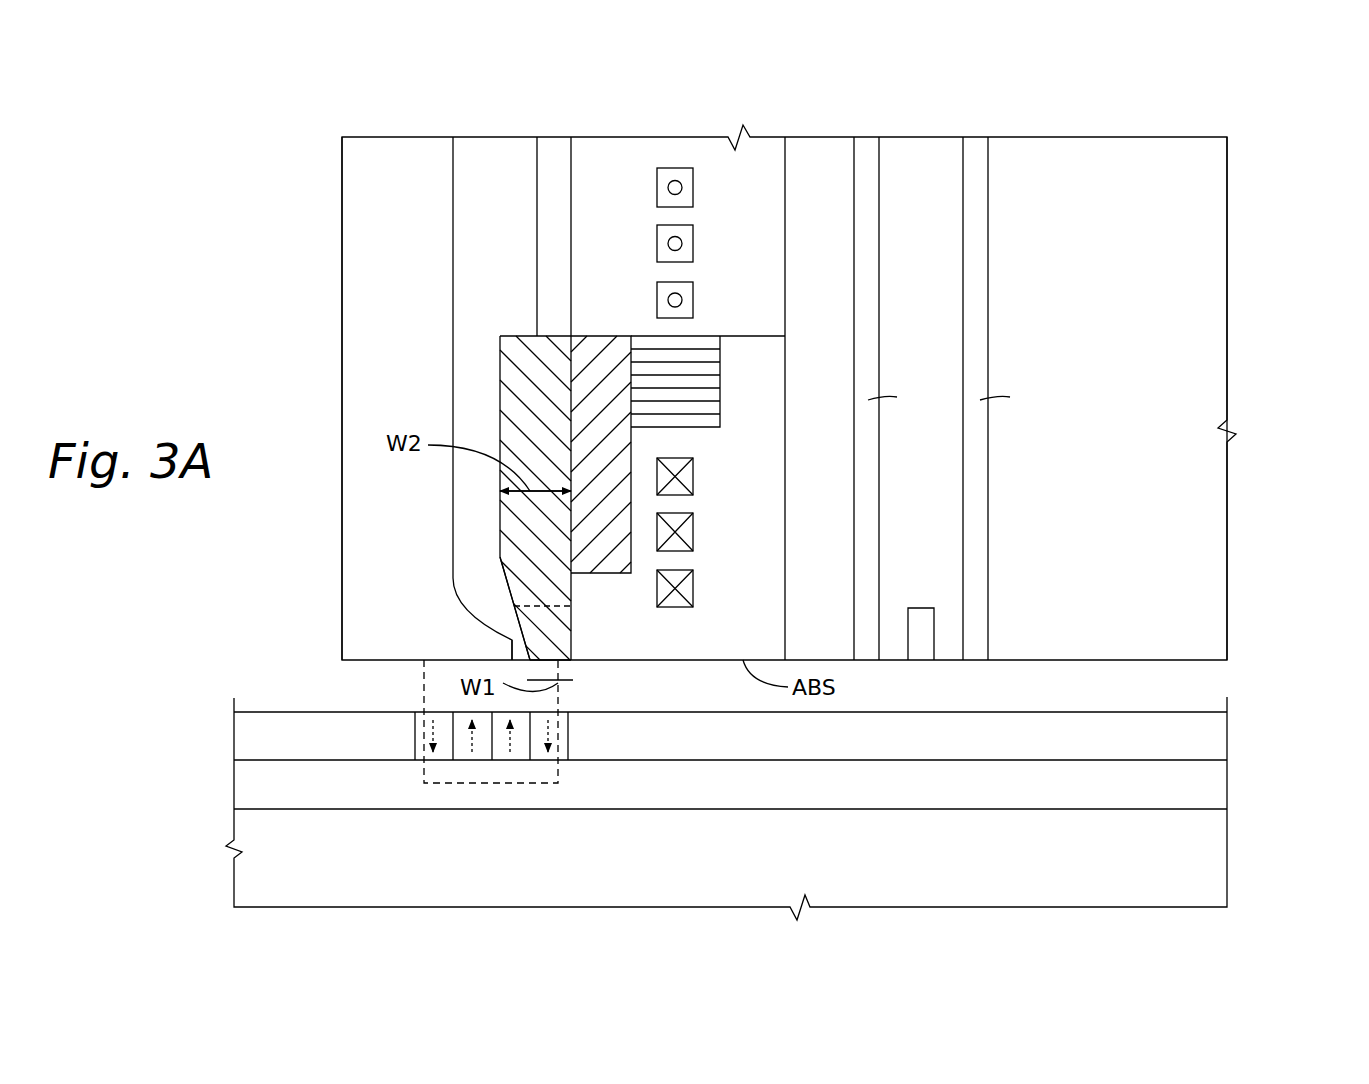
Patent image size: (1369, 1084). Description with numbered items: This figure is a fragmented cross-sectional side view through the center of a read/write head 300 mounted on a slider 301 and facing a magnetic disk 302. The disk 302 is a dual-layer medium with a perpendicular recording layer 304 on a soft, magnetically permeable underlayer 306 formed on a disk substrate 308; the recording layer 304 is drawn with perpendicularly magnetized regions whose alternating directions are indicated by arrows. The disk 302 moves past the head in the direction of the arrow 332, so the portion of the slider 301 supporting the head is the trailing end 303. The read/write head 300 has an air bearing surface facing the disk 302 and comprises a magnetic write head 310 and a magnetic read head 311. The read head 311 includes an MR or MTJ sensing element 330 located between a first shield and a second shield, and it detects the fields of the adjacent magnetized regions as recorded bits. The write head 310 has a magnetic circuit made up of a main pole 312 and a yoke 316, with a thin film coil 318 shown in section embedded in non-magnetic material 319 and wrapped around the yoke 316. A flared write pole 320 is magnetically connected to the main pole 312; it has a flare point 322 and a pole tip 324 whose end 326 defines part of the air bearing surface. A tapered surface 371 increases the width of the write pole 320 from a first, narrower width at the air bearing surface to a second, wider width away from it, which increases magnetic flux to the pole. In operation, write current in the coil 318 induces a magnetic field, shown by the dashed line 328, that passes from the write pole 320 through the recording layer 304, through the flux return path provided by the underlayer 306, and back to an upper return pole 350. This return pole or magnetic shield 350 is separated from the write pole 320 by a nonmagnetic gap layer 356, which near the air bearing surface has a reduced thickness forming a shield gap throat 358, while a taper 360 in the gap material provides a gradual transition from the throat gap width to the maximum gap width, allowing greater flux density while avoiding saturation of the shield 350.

The read/write head 300 is at (187, 128).
The slider 301 is at (1215, 248).
The magnetic disk 302 is at (1256, 838).
The trailing end 303 is at (303, 366).
The recording layer 304 is at (1215, 740).
The magnetically permeable underlayer 306 is at (1215, 789).
The disk substrate 308 is at (1215, 878).
The magnetic write head 310 is at (797, 118).
The magnetic read head 311 is at (998, 118).
The main pole 312 is at (592, 345).
The yoke 316 is at (707, 333).
The thin film coil 318 is at (705, 157).
The non-magnetic material 319 is at (627, 227).
The write pole 320 is at (515, 347).
The flare point 322 is at (545, 602).
The pole tip 324 is at (567, 623).
The end 326 is at (571, 660).
The magnetic field 328 is at (424, 687).
The MR sensing element 330 is at (915, 617).
The arrow 332 is at (148, 783).
The upper return pole 350 is at (342, 237).
The nonmagnetic gap layer 356 is at (460, 381).
The shield gap throat 358 is at (513, 646).
The taper 360 is at (453, 602).
The tapered surface 371 is at (513, 607).